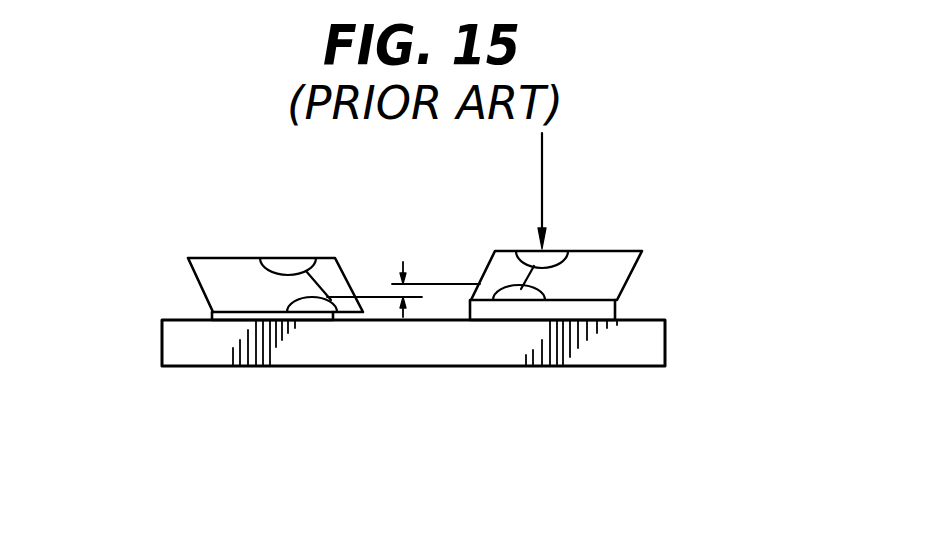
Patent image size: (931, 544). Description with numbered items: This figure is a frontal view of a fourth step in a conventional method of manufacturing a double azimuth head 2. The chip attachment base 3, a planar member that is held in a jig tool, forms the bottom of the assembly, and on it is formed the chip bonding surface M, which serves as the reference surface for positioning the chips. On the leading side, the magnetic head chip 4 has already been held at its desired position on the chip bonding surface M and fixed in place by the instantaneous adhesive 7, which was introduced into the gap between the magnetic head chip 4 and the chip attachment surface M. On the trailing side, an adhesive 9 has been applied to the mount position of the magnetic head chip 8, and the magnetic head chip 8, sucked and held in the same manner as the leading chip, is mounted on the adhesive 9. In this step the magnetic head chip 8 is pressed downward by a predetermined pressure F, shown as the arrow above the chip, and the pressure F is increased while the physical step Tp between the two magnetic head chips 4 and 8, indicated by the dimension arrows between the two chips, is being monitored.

The double azimuth head 2 is at (209, 385).
The chip attachment base 3 is at (653, 347).
The magnetic head chip 4 is at (237, 282).
The instantaneous adhesive 7 is at (317, 315).
The magnetic head chip 8 is at (595, 280).
The adhesive 9 is at (537, 308).
The pressure F is at (542, 182).
The physical step Tp is at (403, 264).
The chip bonding surface M is at (190, 317).